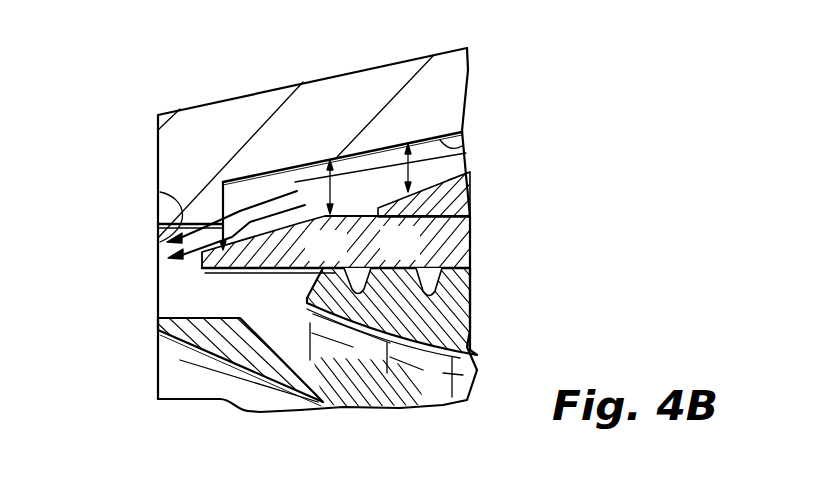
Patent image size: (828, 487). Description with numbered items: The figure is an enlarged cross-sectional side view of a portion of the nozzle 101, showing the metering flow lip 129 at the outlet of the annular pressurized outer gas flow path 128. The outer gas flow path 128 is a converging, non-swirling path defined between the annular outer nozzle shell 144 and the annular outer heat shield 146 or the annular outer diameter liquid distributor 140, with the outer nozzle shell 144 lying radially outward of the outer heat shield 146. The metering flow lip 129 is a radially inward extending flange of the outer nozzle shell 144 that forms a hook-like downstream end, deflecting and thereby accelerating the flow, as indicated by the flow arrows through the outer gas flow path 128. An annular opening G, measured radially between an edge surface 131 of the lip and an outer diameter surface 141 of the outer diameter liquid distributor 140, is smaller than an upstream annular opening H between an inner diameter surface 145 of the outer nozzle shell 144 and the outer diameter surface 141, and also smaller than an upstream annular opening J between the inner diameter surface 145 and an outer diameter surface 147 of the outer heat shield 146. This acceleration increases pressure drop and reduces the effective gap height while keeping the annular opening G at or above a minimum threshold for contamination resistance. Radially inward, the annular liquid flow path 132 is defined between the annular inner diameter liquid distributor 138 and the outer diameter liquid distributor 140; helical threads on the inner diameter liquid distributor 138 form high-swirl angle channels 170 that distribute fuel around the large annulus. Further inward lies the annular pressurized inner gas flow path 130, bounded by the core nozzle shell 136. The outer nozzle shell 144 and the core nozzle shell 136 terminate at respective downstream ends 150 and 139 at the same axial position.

The nozzle 101 is at (153, 88).
The outer gas flow path 128 is at (368, 182).
The metering flow lip 129 is at (160, 192).
The inner gas flow path 130 is at (355, 352).
The edge surface 131 is at (158, 240).
The liquid flow path 132 is at (429, 282).
The core nozzle shell 136 is at (238, 348).
The inner diameter liquid distributor 138 is at (450, 393).
The downstream end of core nozzle shell 139 is at (157, 337).
The outer diameter liquid distributor 140 is at (465, 240).
The outer diameter surface 141 is at (296, 222).
The outer nozzle shell 144 is at (450, 90).
The inner diameter surface 145 is at (460, 143).
The outer heat shield 146 is at (457, 197).
The outer diameter surface of outer heat shield 147 is at (460, 166).
The downstream end of outer nozzle shell 150 is at (157, 167).
The high-swirl angle channels 170 is at (360, 286).
The annular opening G is at (210, 240).
The upstream annular opening H is at (325, 200).
The upstream annular opening J is at (410, 160).